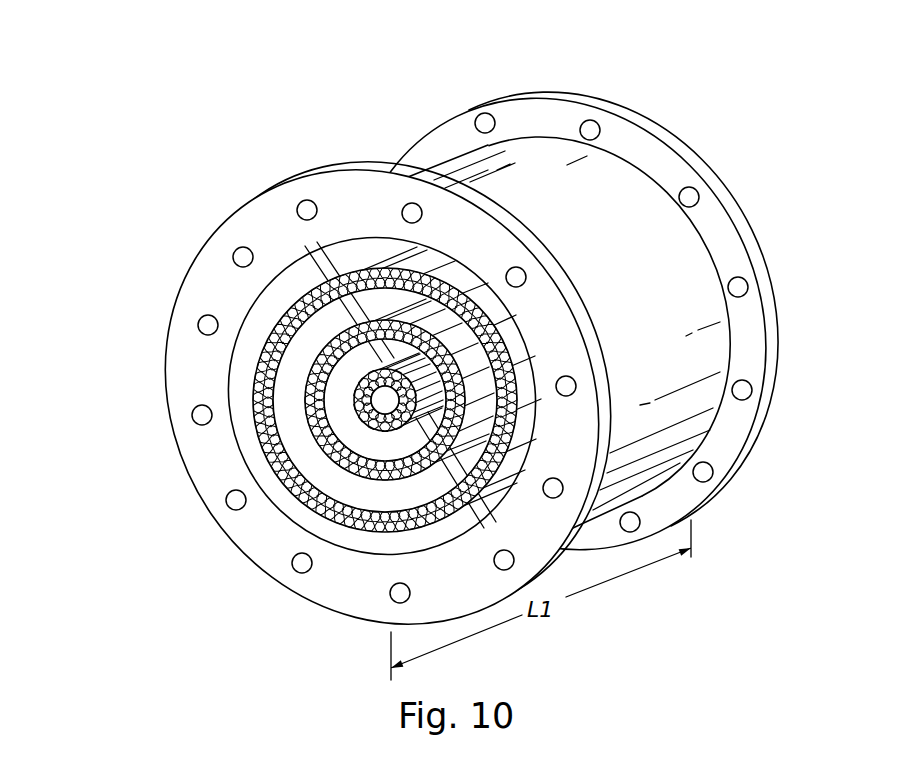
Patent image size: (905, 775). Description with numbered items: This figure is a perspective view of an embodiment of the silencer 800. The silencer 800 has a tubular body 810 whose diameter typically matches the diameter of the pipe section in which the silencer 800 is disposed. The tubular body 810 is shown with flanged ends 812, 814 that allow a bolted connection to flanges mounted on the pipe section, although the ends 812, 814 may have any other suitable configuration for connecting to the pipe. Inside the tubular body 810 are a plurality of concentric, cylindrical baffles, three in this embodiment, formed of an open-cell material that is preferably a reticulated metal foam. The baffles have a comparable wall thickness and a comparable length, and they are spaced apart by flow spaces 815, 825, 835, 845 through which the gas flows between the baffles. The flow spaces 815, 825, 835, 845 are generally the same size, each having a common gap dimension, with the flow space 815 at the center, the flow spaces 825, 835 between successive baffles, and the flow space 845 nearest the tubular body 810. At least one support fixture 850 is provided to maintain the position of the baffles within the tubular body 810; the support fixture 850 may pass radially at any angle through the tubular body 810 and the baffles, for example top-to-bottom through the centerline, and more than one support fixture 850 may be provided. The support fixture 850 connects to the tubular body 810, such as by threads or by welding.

The silencer 800 is at (160, 110).
The tubular body 810 is at (603, 220).
The flanged end 812 is at (337, 207).
The flanged end 814 is at (534, 125).
The flow space 815 is at (385, 407).
The flow space 825 is at (340, 413).
The flow space 835 is at (290, 370).
The flow space 845 is at (275, 303).
The support fixture 850 is at (325, 262).